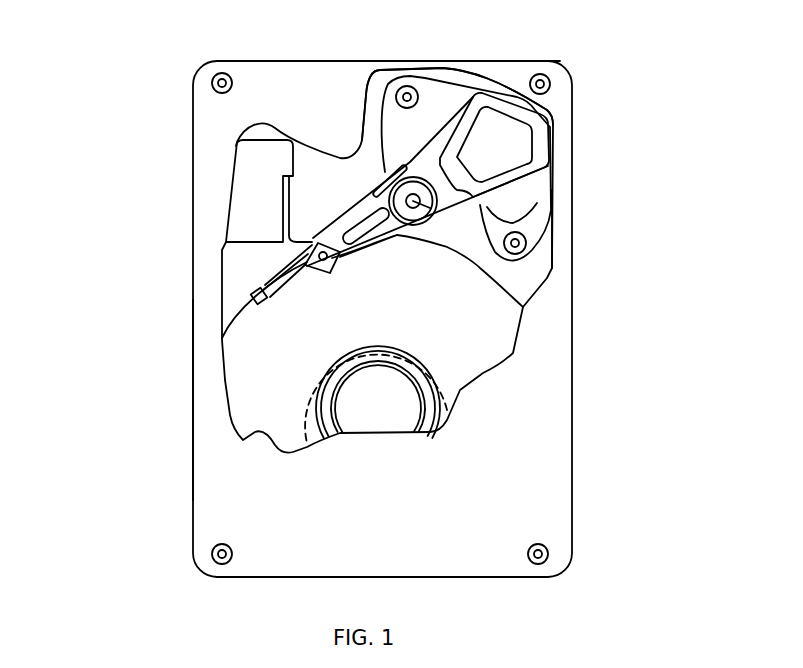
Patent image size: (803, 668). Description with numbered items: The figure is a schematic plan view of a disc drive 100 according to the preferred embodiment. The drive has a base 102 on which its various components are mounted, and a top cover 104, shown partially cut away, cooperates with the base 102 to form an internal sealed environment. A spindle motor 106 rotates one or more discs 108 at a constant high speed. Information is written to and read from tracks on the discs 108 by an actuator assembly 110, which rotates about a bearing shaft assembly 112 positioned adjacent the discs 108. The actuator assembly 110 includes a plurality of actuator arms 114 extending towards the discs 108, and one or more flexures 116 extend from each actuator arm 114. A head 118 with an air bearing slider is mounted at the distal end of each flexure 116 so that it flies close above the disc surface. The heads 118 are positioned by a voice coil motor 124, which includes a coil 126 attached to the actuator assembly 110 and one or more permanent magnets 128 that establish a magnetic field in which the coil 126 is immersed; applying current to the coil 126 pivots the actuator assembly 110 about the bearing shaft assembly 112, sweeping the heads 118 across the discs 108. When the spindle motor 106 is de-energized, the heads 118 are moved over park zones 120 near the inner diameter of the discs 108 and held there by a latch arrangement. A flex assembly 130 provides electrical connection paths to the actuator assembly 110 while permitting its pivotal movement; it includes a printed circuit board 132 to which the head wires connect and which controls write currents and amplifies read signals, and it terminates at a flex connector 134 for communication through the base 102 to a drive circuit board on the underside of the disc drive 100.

The disc drive 100 is at (170, 48).
The base 102 is at (233, 252).
The top cover 104 is at (232, 487).
The spindle motor 106 is at (375, 410).
The discs 108 is at (480, 360).
The actuator assembly 110 is at (393, 228).
The bearing shaft assembly 112 is at (447, 213).
The actuator arms 114 is at (370, 250).
The flexures 116 is at (280, 283).
The head 118 is at (250, 302).
The park zones 120 is at (307, 412).
The voice coil motor 124 is at (461, 52).
The coil 126 is at (542, 148).
The permanent magnets 128 is at (432, 138).
The flex assembly 130 is at (357, 205).
The printed circuit board 132 is at (393, 173).
The flex connector 134 is at (250, 183).